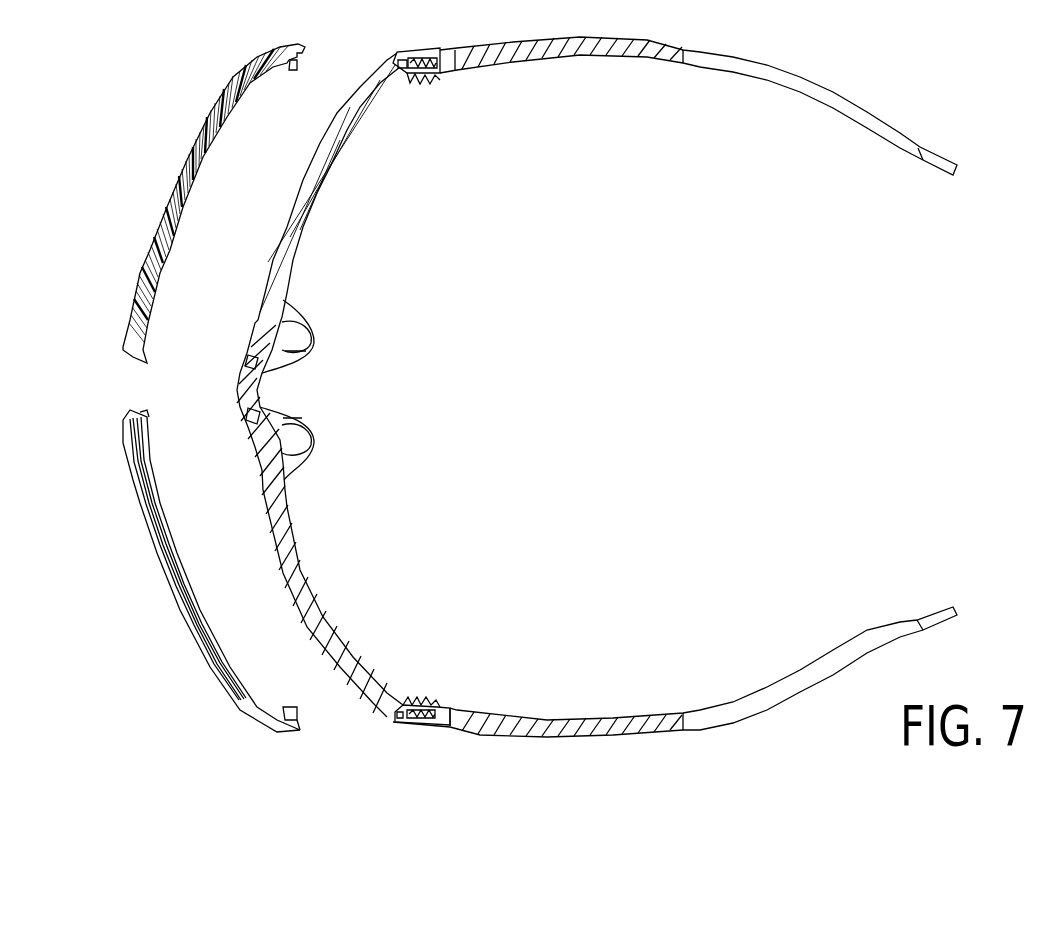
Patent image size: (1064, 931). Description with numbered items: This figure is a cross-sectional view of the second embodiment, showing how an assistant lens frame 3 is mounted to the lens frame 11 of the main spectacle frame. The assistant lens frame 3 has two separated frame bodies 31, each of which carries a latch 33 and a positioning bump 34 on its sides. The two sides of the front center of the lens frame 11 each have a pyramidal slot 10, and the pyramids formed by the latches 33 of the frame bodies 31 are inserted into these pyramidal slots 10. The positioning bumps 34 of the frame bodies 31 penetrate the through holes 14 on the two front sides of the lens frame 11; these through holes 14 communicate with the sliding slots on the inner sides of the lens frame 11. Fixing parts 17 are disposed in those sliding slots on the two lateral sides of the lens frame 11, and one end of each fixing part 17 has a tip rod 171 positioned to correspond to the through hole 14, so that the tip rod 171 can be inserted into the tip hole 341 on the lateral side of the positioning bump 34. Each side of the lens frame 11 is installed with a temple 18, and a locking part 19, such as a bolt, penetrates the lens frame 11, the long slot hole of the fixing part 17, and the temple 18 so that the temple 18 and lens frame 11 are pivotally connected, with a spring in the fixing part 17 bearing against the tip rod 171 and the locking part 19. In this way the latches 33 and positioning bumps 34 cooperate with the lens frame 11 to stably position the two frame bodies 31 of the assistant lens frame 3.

The assistant lens frame 3 is at (218, 70).
The frame body 31 is at (183, 162).
The lens frame 11 is at (293, 215).
The pyramidal slot 10 is at (253, 418).
The latch 33 is at (128, 410).
The positioning bump 34 is at (282, 707).
The tip hole 341 is at (300, 714).
The through hole 14 is at (391, 723).
The fixing part 17 is at (423, 703).
The tip rod 171 is at (397, 727).
The locking part 19 is at (435, 730).
The temple 18 is at (593, 734).